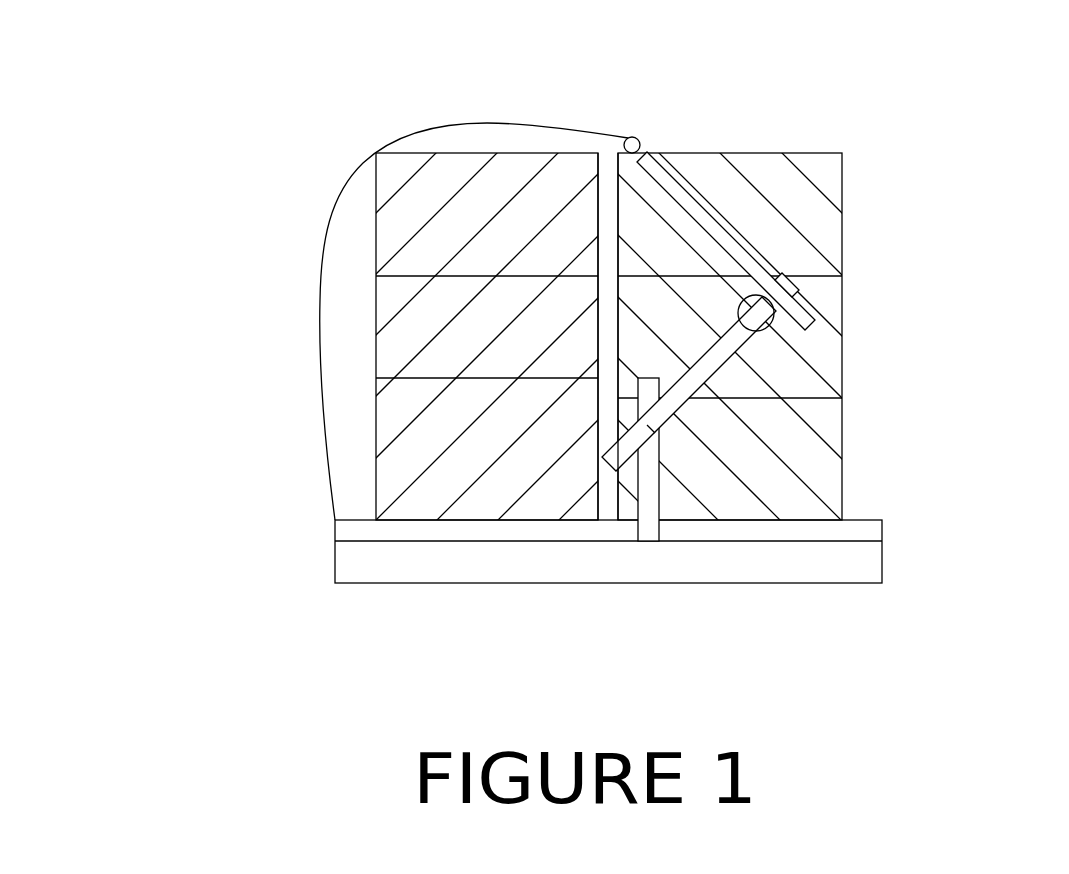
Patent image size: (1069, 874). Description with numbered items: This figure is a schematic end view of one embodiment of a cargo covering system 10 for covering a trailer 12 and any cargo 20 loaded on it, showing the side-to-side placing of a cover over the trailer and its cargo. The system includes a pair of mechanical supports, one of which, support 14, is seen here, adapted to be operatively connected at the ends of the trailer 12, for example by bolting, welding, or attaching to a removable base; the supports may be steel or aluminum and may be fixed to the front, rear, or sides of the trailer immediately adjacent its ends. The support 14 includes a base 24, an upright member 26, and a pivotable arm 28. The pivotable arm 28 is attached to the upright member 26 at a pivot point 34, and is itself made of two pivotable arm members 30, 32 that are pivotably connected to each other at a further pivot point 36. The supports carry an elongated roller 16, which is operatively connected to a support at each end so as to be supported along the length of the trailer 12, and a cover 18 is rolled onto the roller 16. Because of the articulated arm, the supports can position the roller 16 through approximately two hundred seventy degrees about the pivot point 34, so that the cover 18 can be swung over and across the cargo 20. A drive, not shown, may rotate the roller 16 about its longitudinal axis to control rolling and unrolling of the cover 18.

The cargo covering system 10 is at (307, 128).
The trailer 12 is at (712, 567).
The mechanical support 14 is at (620, 482).
The roller 16 is at (638, 136).
The cover 18 is at (458, 125).
The cargo 20 is at (828, 200).
The base 24 is at (443, 530).
The upright member 26 is at (648, 500).
The pivotable arm 28 is at (776, 330).
The pivotable arm member 30 is at (740, 367).
The pivotable arm member 32 is at (767, 263).
The pivot point 34 is at (647, 425).
The pivot point 36 is at (740, 303).